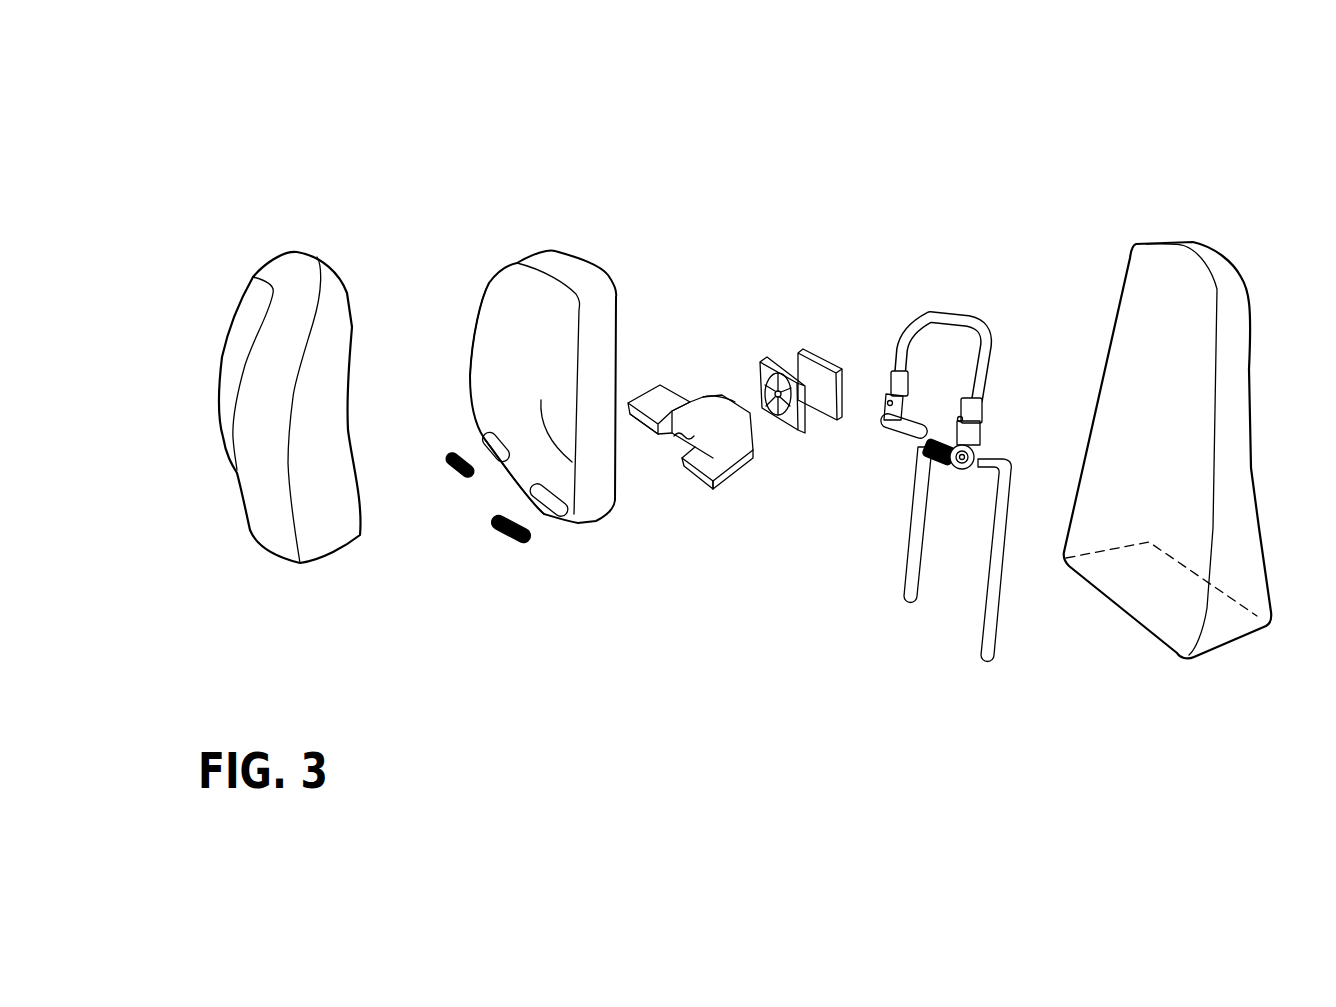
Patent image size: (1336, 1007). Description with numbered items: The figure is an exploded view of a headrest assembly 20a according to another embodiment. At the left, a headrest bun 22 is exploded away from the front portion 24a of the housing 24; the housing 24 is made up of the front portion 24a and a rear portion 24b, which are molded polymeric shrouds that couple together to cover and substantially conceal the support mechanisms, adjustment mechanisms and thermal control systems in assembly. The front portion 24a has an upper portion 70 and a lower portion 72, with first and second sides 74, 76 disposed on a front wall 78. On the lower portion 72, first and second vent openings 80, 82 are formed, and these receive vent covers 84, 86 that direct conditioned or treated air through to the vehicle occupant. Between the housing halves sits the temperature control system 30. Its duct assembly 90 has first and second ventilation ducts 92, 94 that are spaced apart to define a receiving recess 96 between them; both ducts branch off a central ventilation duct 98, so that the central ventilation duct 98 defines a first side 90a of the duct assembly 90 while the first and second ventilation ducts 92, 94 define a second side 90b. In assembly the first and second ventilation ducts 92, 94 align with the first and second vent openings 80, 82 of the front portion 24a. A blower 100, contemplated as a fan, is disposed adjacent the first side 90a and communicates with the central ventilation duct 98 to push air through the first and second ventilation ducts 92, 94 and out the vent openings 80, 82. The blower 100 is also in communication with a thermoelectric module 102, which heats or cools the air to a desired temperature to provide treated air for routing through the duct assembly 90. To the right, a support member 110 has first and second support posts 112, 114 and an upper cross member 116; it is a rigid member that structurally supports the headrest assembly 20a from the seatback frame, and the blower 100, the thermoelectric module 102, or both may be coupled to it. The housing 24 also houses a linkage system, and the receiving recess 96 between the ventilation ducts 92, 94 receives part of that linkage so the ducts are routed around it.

The headrest assembly 20a is at (1070, 119).
The headrest bun 22 is at (232, 358).
The housing 24 is at (1130, 242).
The front portion 24a is at (541, 256).
The rear portion 24b is at (1227, 269).
The temperature control system 30 is at (887, 500).
The upper portion 70 is at (510, 273).
The lower portion 72 is at (516, 473).
The first side 74 is at (469, 374).
The second side 76 is at (572, 462).
The front wall 78 is at (505, 373).
The first vent opening 80 is at (483, 434).
The second vent opening 82 is at (555, 503).
The vent cover 84 is at (447, 454).
The vent cover 86 is at (510, 541).
The duct assembly 90 is at (713, 488).
The first side 90a is at (753, 415).
The second side 90b is at (653, 432).
The first ventilation duct 92 is at (662, 402).
The second ventilation duct 94 is at (728, 453).
The receiving recess 96 is at (682, 432).
The central ventilation duct 98 is at (733, 404).
The blower 100 is at (763, 348).
The thermoelectric module 102 is at (823, 346).
The support member 110 is at (999, 346).
The first support post 112 is at (915, 572).
The second support post 114 is at (993, 612).
The upper cross member 116 is at (961, 321).